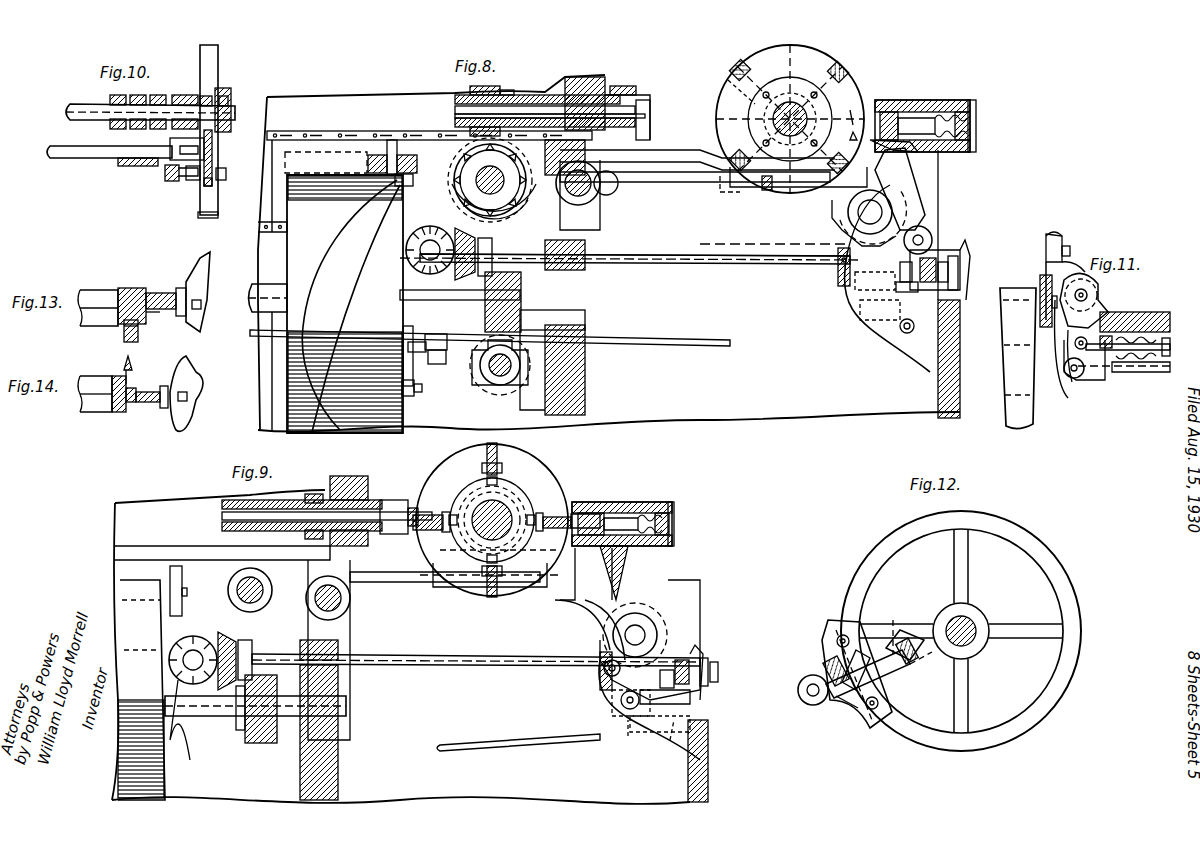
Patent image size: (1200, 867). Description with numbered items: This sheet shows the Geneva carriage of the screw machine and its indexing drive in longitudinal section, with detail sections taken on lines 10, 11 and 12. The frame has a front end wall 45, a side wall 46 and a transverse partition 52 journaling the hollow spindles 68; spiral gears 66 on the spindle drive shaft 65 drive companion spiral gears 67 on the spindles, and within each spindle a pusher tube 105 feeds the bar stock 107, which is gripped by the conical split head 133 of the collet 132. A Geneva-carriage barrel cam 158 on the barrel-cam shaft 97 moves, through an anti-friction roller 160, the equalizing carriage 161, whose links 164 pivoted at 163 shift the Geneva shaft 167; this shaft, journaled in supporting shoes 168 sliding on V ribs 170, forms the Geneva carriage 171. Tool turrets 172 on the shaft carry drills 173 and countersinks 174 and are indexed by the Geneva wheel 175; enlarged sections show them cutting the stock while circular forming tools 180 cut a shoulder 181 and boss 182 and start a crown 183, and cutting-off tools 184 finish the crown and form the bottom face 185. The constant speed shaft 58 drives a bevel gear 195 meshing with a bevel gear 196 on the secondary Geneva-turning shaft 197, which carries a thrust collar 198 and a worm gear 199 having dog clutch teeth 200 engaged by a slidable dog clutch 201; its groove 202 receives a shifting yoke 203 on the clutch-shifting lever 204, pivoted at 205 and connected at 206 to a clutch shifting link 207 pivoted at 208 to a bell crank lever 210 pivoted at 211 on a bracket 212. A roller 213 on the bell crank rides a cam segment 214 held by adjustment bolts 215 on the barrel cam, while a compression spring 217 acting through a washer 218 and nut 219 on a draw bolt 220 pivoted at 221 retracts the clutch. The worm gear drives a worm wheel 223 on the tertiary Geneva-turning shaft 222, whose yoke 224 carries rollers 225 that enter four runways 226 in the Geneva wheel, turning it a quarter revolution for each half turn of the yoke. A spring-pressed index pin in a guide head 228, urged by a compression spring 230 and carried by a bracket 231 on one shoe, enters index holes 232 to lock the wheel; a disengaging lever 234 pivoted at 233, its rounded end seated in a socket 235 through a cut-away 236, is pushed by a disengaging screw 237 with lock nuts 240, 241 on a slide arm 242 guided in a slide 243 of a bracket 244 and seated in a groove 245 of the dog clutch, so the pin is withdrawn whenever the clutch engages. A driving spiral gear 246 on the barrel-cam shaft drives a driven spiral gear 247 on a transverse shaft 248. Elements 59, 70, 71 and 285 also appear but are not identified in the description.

In FIG. 8, the section line 10 is at (808, 262).
In FIG. 12, the section line 11 is at (776, 712).
In FIG. 8, the section line 12 is at (458, 440).
In FIG. 10, the front end wall 45 is at (210, 48).
In FIG. 8, the front end wall 45 is at (945, 420).
In FIG. 9, the front end wall 45 is at (700, 800).
In FIG. 8, the vertical side wall 46 is at (310, 102).
In FIG. 9, the vertical side wall 46 is at (182, 792).
In FIG. 8, the vertical transverse partition 52 is at (584, 76).
In FIG. 9, the vertical transverse partition 52 is at (338, 478).
In FIG. 8, the constant speed shaft 58 is at (410, 260).
In FIG. 9, the constant speed shaft 58 is at (196, 636).
In FIG. 8, the shaft 59 is at (600, 256).
In FIG. 9, the shaft 59 is at (262, 648).
In FIG. 8, the spindle drive shaft 65 is at (530, 200).
In FIG. 9, the spindle drive shaft 65 is at (268, 594).
In FIG. 8, the spiral gears 66 is at (458, 165).
In FIG. 8, the companion spiral gears 67 is at (500, 90).
In FIG. 8, the spindles 68 is at (470, 92).
In FIG. 9, the spindles 68 is at (330, 494).
In FIG. 8, the gear flange 70 is at (452, 212).
In FIG. 8, the guide rail 71 is at (360, 130).
In FIG. 8, the barrel-cam shaft 97 is at (262, 322).
In FIG. 9, the barrel-cam shaft 97 is at (346, 706).
In FIG. 12, the barrel-cam shaft 97 is at (970, 624).
In FIG. 8, the pusher tube 105 is at (458, 108).
In FIG. 9, the pusher tube 105 is at (222, 524).
In FIG. 13, the bar stock 107 is at (82, 380).
In FIG. 14, the bar stock 107 is at (82, 386).
In FIG. 8, the bar stock 107 is at (648, 115).
In FIG. 9, the bar stock 107 is at (225, 514).
In FIG. 8, the collet 132 is at (460, 96).
In FIG. 9, the collet 132 is at (222, 530).
In FIG. 8, the conical split head 133 is at (645, 92).
In FIG. 9, the conical split head 133 is at (400, 512).
In FIG. 8, the Geneva-carriage barrel cam 158 is at (287, 386).
In FIG. 11, the Geneva-carriage barrel cam 158 is at (1020, 428).
In FIG. 9, the Geneva-carriage barrel cam 158 is at (148, 630).
In FIG. 12, the Geneva-carriage barrel cam 158 is at (1042, 548).
In FIG. 8, the anti-friction roller 160 is at (392, 182).
In FIG. 8, the equalizing carriage 161 is at (420, 168).
In FIG. 8, the pivots 163 is at (385, 140).
In FIG. 8, the links 164 is at (692, 150).
In FIG. 9, the links 164 is at (116, 550).
In FIG. 8, the Geneva shaft 167 is at (772, 118).
In FIG. 9, the Geneva shaft 167 is at (512, 514).
In FIG. 8, the supporting shoes 168 is at (770, 190).
In FIG. 9, the supporting shoes 168 is at (440, 590).
In FIG. 8, the V ribs 170 is at (700, 182).
In FIG. 9, the V ribs 170 is at (404, 588).
In FIG. 8, the Geneva carriage 171 is at (716, 180).
In FIG. 9, the Geneva carriage 171 is at (540, 590).
In FIG. 13, the tool turrets 172 is at (203, 258).
In FIG. 14, the tool turrets 172 is at (190, 372).
In FIG. 8, the tool turrets 172 is at (796, 68).
In FIG. 9, the tool turrets 172 is at (540, 490).
In FIG. 14, the drills 173 is at (150, 402).
In FIG. 8, the drills 173 is at (846, 84).
In FIG. 9, the drills 173 is at (500, 462).
In FIG. 13, the countersinks 174 is at (166, 290).
In FIG. 8, the countersinks 174 is at (774, 70).
In FIG. 9, the countersinks 174 is at (438, 512).
In FIG. 8, the Geneva wheel 175 is at (812, 52).
In FIG. 9, the Geneva wheel 175 is at (470, 592).
In FIG. 13, the circular forming tools 180 is at (124, 332).
In FIG. 13, the shoulder 181 is at (130, 290).
In FIG. 13, the boss 182 is at (148, 290).
In FIG. 13, the crown 183 is at (124, 292).
In FIG. 14, the crown 183 is at (128, 412).
In FIG. 14, the cutting-off tools 184 is at (124, 370).
In FIG. 13, the bottom face 185 is at (160, 312).
In FIG. 8, the driving bevel gear 195 is at (455, 262).
In FIG. 9, the driving bevel gear 195 is at (224, 636).
In FIG. 8, the driven bevel gear 196 is at (500, 228).
In FIG. 9, the driven bevel gear 196 is at (248, 640).
In FIG. 10, the secondary Geneva-turning shaft 197 is at (66, 111).
In FIG. 8, the secondary Geneva-turning shaft 197 is at (688, 264).
In FIG. 9, the secondary Geneva-turning shaft 197 is at (432, 660).
In FIG. 10, the thrust collar 198 is at (112, 98).
In FIG. 8, the thrust collar 198 is at (836, 280).
In FIG. 9, the thrust collar 198 is at (600, 676).
In FIG. 10, the worm gear 199 is at (135, 97).
In FIG. 8, the worm gear 199 is at (858, 290).
In FIG. 9, the worm gear 199 is at (630, 712).
In FIG. 10, the dog clutch teeth 200 is at (168, 96).
In FIG. 9, the dog clutch teeth 200 is at (640, 700).
In FIG. 10, the dog clutch 201 is at (212, 95).
In FIG. 8, the dog clutch 201 is at (900, 304).
In FIG. 9, the dog clutch 201 is at (680, 660).
In FIG. 10, the annular groove 202 is at (196, 84).
In FIG. 10, the shifting yoke 203 is at (214, 142).
In FIG. 10, the clutch-shifting lever 204 is at (213, 152).
In FIG. 8, the clutch-shifting lever 204 is at (900, 306).
In FIG. 9, the clutch-shifting lever 204 is at (690, 712).
In FIG. 8, the pivot 205 is at (990, 216).
In FIG. 9, the pivot 205 is at (690, 654).
In FIG. 8, the pivot 206 is at (905, 335).
In FIG. 9, the pivot 206 is at (670, 740).
In FIG. 10, the clutch shifting link 207 is at (60, 152).
In FIG. 8, the clutch shifting link 207 is at (720, 342).
In FIG. 11, the clutch shifting link 207 is at (1100, 374).
In FIG. 9, the clutch shifting link 207 is at (480, 742).
In FIG. 12, the clutch shifting link 207 is at (906, 660).
In FIG. 11, the pivot 208 is at (1104, 380).
In FIG. 12, the pivot 208 is at (906, 630).
In FIG. 8, the bell crank lever 210 is at (430, 338).
In FIG. 11, the bell crank lever 210 is at (1090, 292).
In FIG. 12, the bell crank lever 210 is at (826, 672).
In FIG. 8, the pivot 211 is at (420, 345).
In FIG. 11, the pivot 211 is at (1094, 300).
In FIG. 12, the pivot 211 is at (836, 660).
In FIG. 8, the bracket 212 is at (585, 362).
In FIG. 11, the bracket 212 is at (1158, 308).
In FIG. 12, the bracket 212 is at (838, 700).
In FIG. 8, the anti-friction roller 213 is at (420, 350).
In FIG. 11, the anti-friction roller 213 is at (1060, 280).
In FIG. 12, the anti-friction roller 213 is at (800, 690).
In FIG. 8, the cam segment 214 is at (410, 395).
In FIG. 11, the cam segment 214 is at (1048, 260).
In FIG. 9, the cam segment 214 is at (172, 580).
In FIG. 12, the cam segment 214 is at (862, 718).
In FIG. 8, the adjustment bolts 215 is at (414, 398).
In FIG. 11, the adjustment bolts 215 is at (1050, 380).
In FIG. 9, the adjustment bolts 215 is at (184, 594).
In FIG. 12, the adjustment bolts 215 is at (838, 638).
In FIG. 11, the compression spring 217 is at (1140, 356).
In FIG. 11, the washer 218 is at (1148, 368).
In FIG. 11, the nut 219 is at (1165, 352).
In FIG. 11, the draw bolt 220 is at (1116, 372).
In FIG. 11, the pivot 221 is at (1070, 400).
In FIG. 8, the tertiary Geneva-turning shaft 222 is at (840, 230).
In FIG. 9, the tertiary Geneva-turning shaft 222 is at (690, 610).
In FIG. 8, the worm wheel 223 is at (848, 208).
In FIG. 9, the worm wheel 223 is at (650, 600).
In FIG. 8, the Geneva-turning yoke 224 is at (888, 112).
In FIG. 9, the Geneva-turning yoke 224 is at (614, 502).
In FIG. 9, the anti-friction rollers 225 is at (630, 740).
In FIG. 8, the runways 226 is at (730, 80).
In FIG. 8, the guide head 228 is at (972, 114).
In FIG. 9, the guide head 228 is at (672, 520).
In FIG. 8, the compression spring 230 is at (950, 118).
In FIG. 9, the compression spring 230 is at (660, 515).
In FIG. 8, the bracket 231 is at (915, 145).
In FIG. 9, the bracket 231 is at (640, 546).
In FIG. 8, the index holes 232 is at (744, 66).
In FIG. 9, the index holes 232 is at (486, 480).
In FIG. 8, the pivot 233 is at (925, 228).
In FIG. 9, the pivot 233 is at (606, 660).
In FIG. 10, the disengaging lever 234 is at (170, 166).
In FIG. 8, the disengaging lever 234 is at (925, 196).
In FIG. 9, the disengaging lever 234 is at (640, 556).
In FIG. 8, the socket 235 is at (918, 116).
In FIG. 9, the socket 235 is at (590, 512).
In FIG. 8, the cut-away 236 is at (904, 112).
In FIG. 9, the cut-away 236 is at (625, 512).
In FIG. 10, the disengaging screw 237 is at (220, 176).
In FIG. 8, the disengaging screw 237 is at (945, 264).
In FIG. 9, the disengaging screw 237 is at (720, 666).
In FIG. 10, the lock nut 240 is at (200, 186).
In FIG. 10, the lock nut 241 is at (212, 182).
In FIG. 8, the lock nut 241 is at (930, 260).
In FIG. 9, the lock nut 241 is at (700, 668).
In FIG. 10, the slide arm 242 is at (210, 214).
In FIG. 8, the slide arm 242 is at (942, 300).
In FIG. 9, the slide arm 242 is at (700, 696).
In FIG. 10, the slide 243 is at (170, 172).
In FIG. 8, the slide 243 is at (905, 296).
In FIG. 9, the slide 243 is at (694, 706).
In FIG. 10, the bracket 244 is at (118, 164).
In FIG. 10, the annular groove 245 is at (220, 98).
In FIG. 8, the driving spiral gear 246 is at (560, 292).
In FIG. 9, the driving spiral gear 246 is at (258, 742).
In FIG. 8, the driven spiral gear 247 is at (490, 388).
In FIG. 8, the transverse shaft 248 is at (505, 380).
In FIG. 8, the boss 285 is at (614, 186).
In FIG. 9, the boss 285 is at (340, 602).